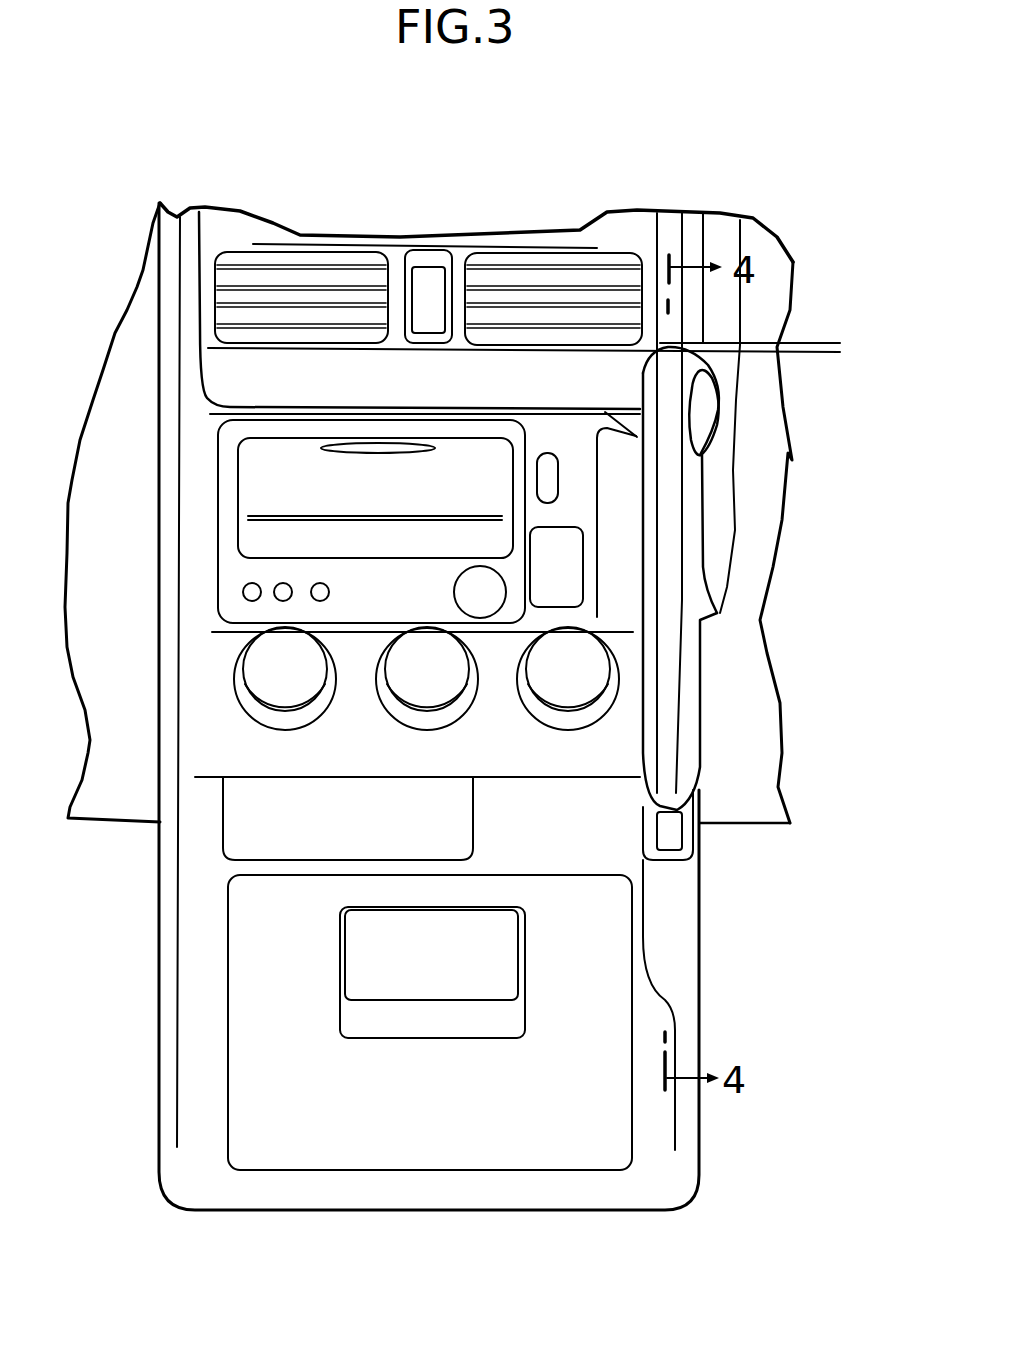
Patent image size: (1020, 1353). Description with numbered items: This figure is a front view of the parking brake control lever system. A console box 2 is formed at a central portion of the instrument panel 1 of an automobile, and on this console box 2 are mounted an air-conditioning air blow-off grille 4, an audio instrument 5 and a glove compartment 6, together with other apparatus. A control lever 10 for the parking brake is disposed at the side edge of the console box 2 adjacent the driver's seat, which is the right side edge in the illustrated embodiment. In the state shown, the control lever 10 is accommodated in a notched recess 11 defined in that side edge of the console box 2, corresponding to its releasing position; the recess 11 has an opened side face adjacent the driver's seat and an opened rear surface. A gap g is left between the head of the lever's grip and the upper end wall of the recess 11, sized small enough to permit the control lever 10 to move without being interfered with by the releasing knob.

The instrument panel 1 is at (786, 507).
The console box 2 is at (662, 225).
The air-conditioning air blow-off grille 4 is at (562, 273).
The audio instrument 5 is at (252, 500).
The glove compartment 6 is at (440, 1106).
The control lever 10 is at (701, 623).
The notched recess 11 is at (717, 507).
The gap g is at (835, 412).